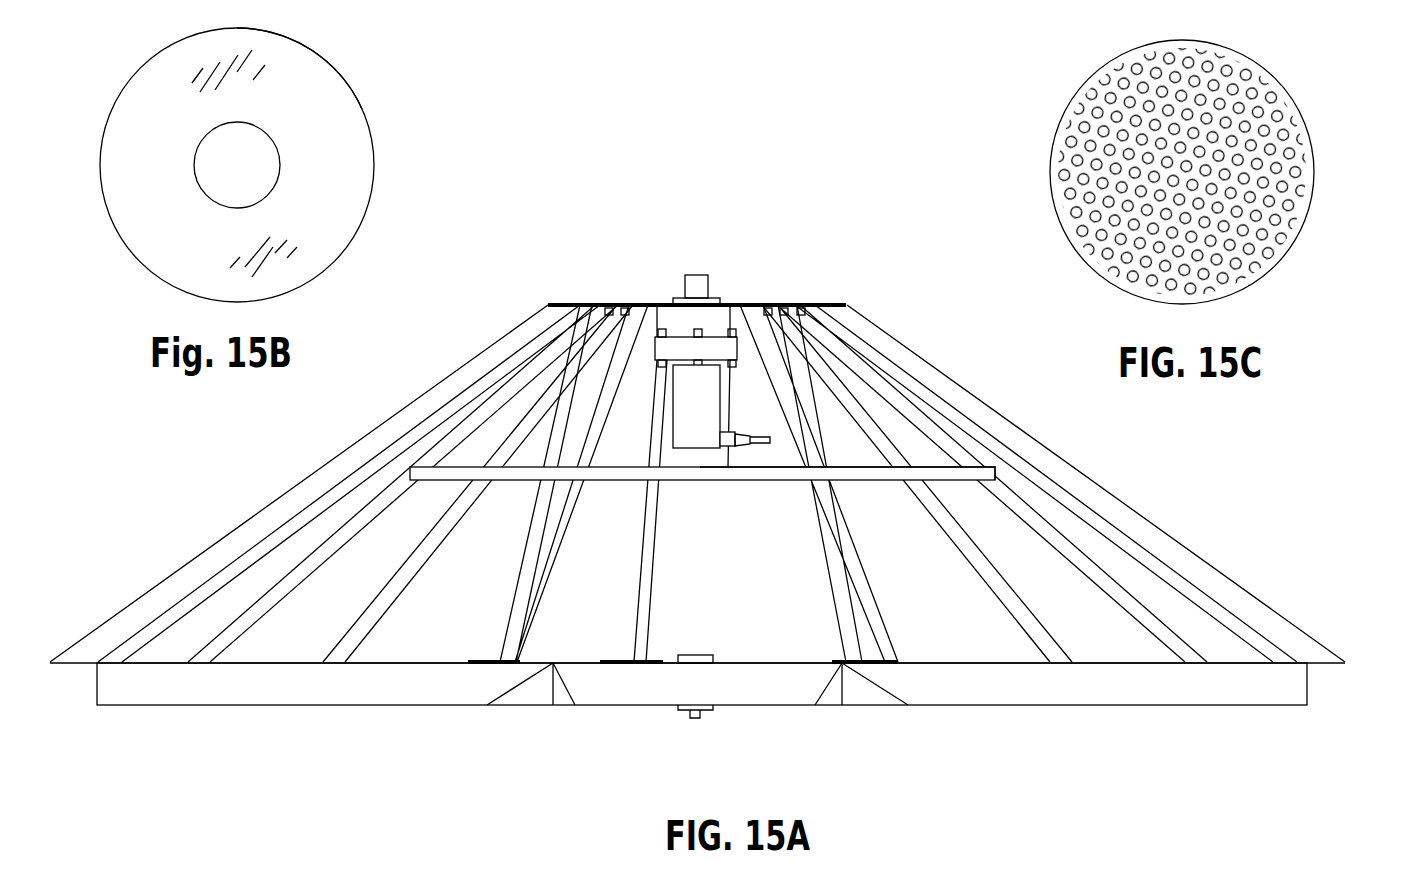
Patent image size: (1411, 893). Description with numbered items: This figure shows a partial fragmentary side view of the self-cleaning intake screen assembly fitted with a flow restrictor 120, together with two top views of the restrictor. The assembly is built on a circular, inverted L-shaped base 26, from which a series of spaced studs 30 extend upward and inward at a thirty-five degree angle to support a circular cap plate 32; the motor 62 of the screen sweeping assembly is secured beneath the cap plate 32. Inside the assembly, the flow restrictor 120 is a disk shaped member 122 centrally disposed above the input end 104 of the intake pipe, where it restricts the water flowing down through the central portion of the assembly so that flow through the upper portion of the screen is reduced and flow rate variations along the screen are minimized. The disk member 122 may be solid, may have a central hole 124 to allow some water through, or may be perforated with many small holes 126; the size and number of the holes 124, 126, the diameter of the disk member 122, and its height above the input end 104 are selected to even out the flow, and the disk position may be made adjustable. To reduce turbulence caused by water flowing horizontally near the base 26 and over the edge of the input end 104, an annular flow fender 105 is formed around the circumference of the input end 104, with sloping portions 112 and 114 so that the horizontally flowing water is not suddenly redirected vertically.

In FIG. 15A, the base 26 is at (1308, 679).
In FIG. 15A, the studs 30 is at (238, 538).
In FIG. 15A, the cap plate 32 is at (786, 302).
In FIG. 15A, the motor 62 is at (707, 414).
In FIG. 15A, the input end 104 is at (550, 697).
In FIG. 15A, the flow fender 105 is at (522, 677).
In FIG. 15A, the sloping portion 112 is at (493, 707).
In FIG. 15A, the sloping portion 114 is at (575, 694).
In FIG. 15B, the flow restrictor 120 is at (368, 45).
In FIG. 15C, the flow restrictor 120 is at (1333, 117).
In FIG. 15A, the flow restrictor 120 is at (478, 455).
In FIG. 15B, the disk shaped member 122 is at (362, 109).
In FIG. 15A, the disk shaped member 122 is at (940, 465).
In FIG. 15B, the central hole 124 is at (257, 177).
In FIG. 15C, the small holes 126 is at (1250, 71).